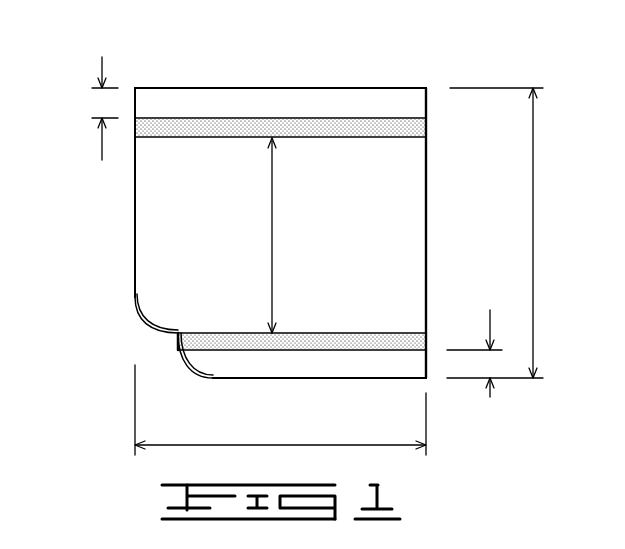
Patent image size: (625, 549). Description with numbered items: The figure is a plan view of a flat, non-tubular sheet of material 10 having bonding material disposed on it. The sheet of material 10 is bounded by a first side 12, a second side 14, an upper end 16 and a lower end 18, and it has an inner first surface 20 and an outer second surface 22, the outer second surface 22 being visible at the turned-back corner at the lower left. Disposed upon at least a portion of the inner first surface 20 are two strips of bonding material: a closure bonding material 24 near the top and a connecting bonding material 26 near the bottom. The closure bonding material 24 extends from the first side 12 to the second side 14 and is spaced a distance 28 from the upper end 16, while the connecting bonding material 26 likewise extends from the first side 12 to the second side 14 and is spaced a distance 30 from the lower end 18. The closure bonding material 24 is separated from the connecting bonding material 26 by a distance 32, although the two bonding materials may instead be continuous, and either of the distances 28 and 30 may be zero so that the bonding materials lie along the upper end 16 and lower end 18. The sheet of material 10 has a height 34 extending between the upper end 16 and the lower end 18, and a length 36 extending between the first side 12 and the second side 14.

The sheet of material 10 is at (218, 45).
The first side 12 is at (135, 212).
The second side 14 is at (427, 168).
The upper end 16 is at (306, 88).
The lower end 18 is at (318, 380).
The inner first surface 20 is at (412, 228).
The outer second surface 22 is at (163, 347).
The closure bonding material 24 is at (410, 126).
The connecting bonding material 26 is at (398, 335).
The distance 28 is at (102, 58).
The distance 30 is at (490, 410).
The distance 32 is at (272, 246).
The height 34 is at (533, 225).
The length 36 is at (272, 445).